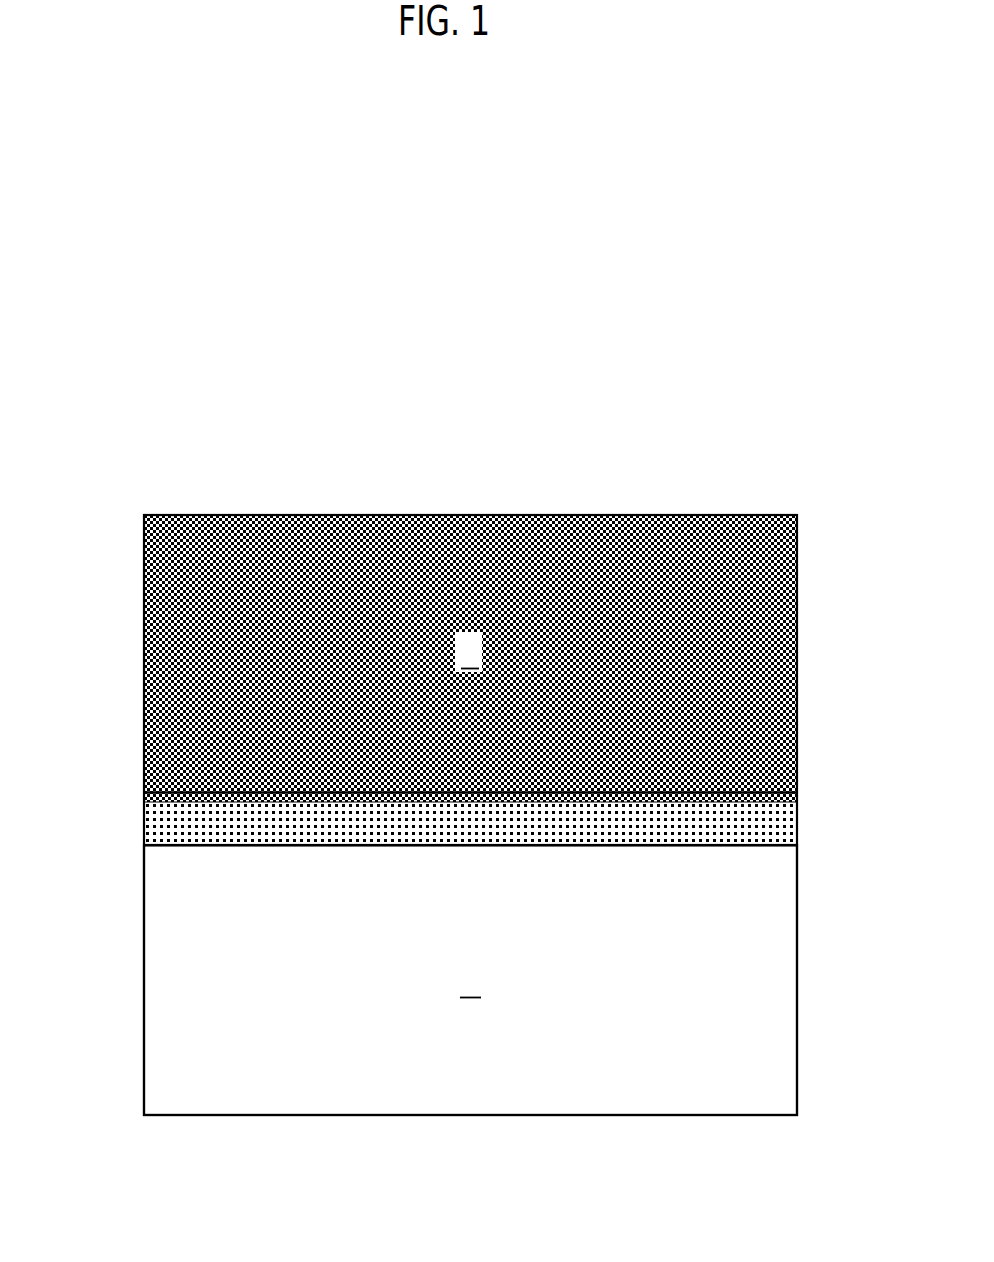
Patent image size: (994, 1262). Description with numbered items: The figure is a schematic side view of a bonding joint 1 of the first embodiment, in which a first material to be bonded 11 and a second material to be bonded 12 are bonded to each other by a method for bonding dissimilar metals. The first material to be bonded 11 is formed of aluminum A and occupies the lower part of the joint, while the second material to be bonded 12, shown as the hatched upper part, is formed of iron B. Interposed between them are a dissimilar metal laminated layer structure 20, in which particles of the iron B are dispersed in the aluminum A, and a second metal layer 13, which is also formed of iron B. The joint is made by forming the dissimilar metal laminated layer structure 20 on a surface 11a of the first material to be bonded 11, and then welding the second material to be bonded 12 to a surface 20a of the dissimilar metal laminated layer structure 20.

The bonding joint 1 is at (727, 480).
The first material to be bonded 11 is at (815, 847).
The surface of the first material to be bonded 11a is at (182, 845).
The second material to be bonded 12 is at (815, 515).
The second metal layer 13 is at (778, 795).
The dissimilar metal laminated layer structure 20 is at (817, 802).
The surface of the dissimilar metal laminated layer structure 20a is at (209, 802).